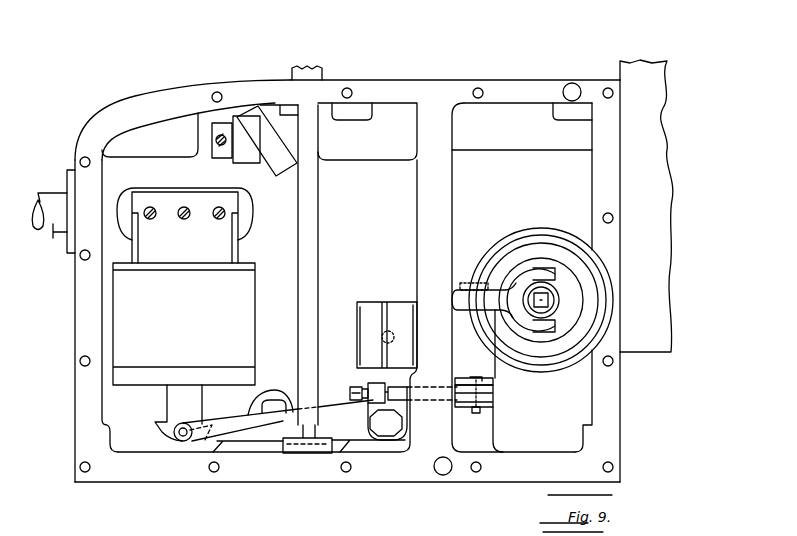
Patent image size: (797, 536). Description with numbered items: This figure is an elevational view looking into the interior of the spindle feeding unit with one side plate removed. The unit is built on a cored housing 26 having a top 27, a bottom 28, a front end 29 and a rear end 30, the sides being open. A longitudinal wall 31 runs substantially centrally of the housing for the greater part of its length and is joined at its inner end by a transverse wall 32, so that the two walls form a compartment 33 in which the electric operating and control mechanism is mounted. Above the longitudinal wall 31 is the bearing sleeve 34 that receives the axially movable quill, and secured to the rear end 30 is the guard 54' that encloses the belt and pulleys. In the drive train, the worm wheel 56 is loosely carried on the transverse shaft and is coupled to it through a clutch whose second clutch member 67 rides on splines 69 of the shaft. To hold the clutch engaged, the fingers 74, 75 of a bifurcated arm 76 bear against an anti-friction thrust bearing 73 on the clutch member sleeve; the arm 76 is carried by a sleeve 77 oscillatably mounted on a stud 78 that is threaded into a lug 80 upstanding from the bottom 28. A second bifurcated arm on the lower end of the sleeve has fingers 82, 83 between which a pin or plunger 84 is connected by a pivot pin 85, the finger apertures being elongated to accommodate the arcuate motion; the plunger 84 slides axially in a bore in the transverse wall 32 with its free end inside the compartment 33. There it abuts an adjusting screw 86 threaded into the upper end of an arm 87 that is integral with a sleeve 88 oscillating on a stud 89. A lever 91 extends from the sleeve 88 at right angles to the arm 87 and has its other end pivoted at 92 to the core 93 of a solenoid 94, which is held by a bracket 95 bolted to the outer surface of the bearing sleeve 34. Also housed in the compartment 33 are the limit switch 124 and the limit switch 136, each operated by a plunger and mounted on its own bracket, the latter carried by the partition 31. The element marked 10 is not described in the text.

The shaft handle 10 is at (53, 238).
The cored housing 26 is at (126, 110).
The top 27 is at (404, 68).
The bottom 28 is at (377, 467).
The front end 29 is at (80, 325).
The rear end 30 is at (607, 387).
The wall 31 is at (309, 279).
The transverse wall 32 is at (443, 231).
The compartment 33 is at (110, 396).
The bearing sleeve 34 is at (384, 258).
The guard 54' is at (661, 206).
The worm wheel 56 is at (567, 245).
The second clutch member 67 is at (577, 258).
The splines 69 is at (560, 302).
The anti-friction thrust bearing 73 is at (563, 282).
The finger 74 is at (543, 272).
The finger 75 is at (558, 327).
The bifurcated arm 76 is at (490, 306).
The sleeve 77 is at (491, 369).
The stud 78 is at (477, 285).
The lug 80 is at (494, 418).
The finger 82 is at (494, 385).
The finger 83 is at (494, 402).
The pin or plunger 84 is at (457, 396).
The pivot pin 85 is at (473, 414).
The adjusting screw 86 is at (351, 392).
The arm 87 is at (373, 402).
The sleeve 88 is at (407, 417).
The stud 89 is at (387, 425).
The lever 91 is at (243, 400).
The pivot 92 is at (178, 440).
The core 93 is at (167, 410).
The solenoid 94 is at (244, 350).
The bracket 95 is at (220, 244).
The limit switch 124 is at (366, 352).
The limit switch 136 is at (269, 174).